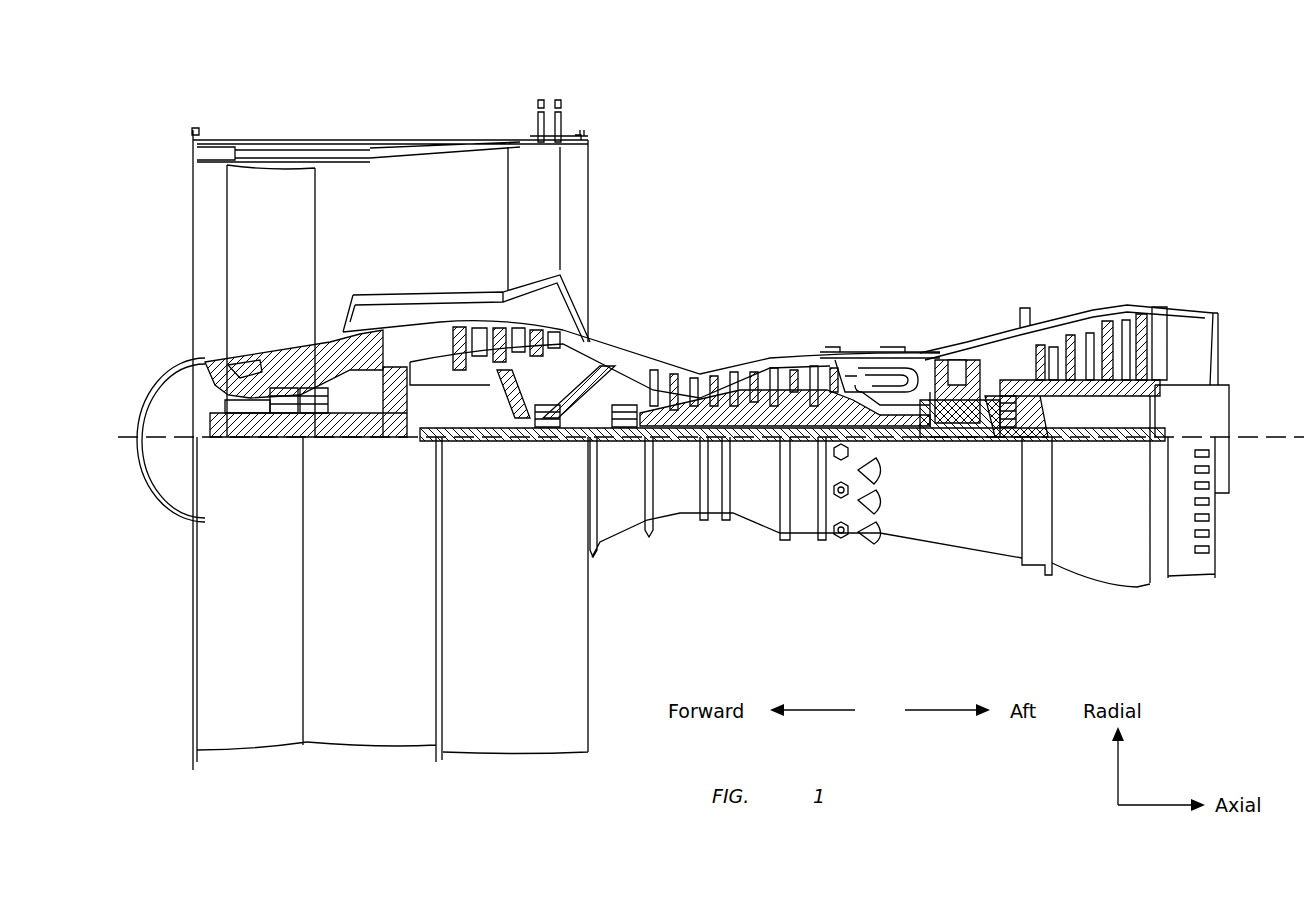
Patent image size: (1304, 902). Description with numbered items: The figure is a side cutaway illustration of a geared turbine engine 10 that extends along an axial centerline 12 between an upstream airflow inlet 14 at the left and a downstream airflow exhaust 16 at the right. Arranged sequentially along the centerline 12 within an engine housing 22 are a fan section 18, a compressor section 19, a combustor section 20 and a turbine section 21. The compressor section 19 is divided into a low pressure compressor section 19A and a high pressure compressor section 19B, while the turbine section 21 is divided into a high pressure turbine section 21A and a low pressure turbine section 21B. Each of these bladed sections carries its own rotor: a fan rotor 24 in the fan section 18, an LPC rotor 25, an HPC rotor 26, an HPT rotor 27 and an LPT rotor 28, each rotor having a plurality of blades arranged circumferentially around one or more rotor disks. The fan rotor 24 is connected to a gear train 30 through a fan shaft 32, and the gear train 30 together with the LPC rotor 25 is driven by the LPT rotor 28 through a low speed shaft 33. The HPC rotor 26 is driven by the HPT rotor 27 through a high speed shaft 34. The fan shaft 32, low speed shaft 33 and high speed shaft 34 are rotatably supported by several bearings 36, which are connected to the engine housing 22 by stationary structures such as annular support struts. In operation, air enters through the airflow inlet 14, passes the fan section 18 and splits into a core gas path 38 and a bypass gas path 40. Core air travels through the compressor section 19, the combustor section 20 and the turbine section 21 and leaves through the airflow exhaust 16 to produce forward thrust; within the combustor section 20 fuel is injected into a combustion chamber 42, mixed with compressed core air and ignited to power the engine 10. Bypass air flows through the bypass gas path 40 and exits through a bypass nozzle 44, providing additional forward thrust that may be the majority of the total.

The geared turbine engine 10 is at (162, 124).
The axial centerline 12 is at (1275, 455).
The upstream airflow inlet 14 is at (193, 208).
The downstream airflow exhaust 16 is at (1220, 340).
The fan section 18 is at (360, 116).
The compressor section 19 is at (805, 56).
The low pressure compressor (LPC) section 19A is at (590, 103).
The high pressure compressor (HPC) section 19B is at (805, 286).
The combustor section 20 is at (925, 286).
The turbine section 21 is at (1180, 219).
The high pressure turbine (HPT) section 21A is at (1005, 286).
The low pressure turbine (LPT) section 21B is at (1180, 286).
The engine housing 22 is at (604, 543).
The fan rotor 24 is at (200, 362).
The LPC rotor 25 is at (489, 437).
The HPC rotor 26 is at (762, 437).
The HPT rotor 27 is at (958, 440).
The LPT rotor 28 is at (1095, 385).
The gear train 30 is at (392, 437).
The fan shaft 32 is at (258, 437).
The low speed shaft 33 is at (805, 440).
The high speed shaft 34 is at (898, 440).
The bearings 36 is at (300, 437).
The core gas path 38 is at (608, 372).
The bypass gas path 40 is at (447, 222).
The combustion chamber 42 is at (880, 378).
The bypass nozzle 44 is at (590, 190).